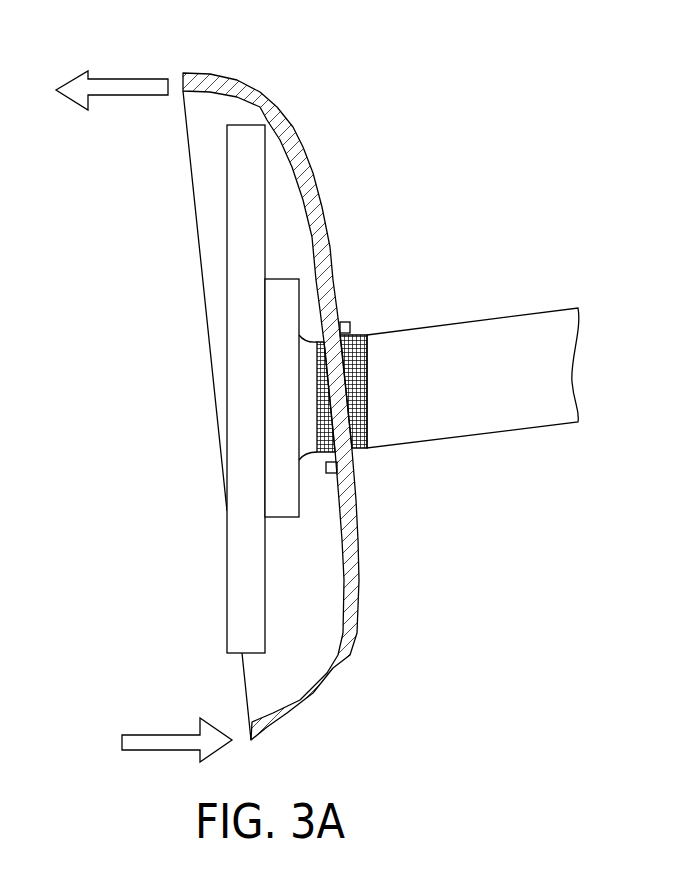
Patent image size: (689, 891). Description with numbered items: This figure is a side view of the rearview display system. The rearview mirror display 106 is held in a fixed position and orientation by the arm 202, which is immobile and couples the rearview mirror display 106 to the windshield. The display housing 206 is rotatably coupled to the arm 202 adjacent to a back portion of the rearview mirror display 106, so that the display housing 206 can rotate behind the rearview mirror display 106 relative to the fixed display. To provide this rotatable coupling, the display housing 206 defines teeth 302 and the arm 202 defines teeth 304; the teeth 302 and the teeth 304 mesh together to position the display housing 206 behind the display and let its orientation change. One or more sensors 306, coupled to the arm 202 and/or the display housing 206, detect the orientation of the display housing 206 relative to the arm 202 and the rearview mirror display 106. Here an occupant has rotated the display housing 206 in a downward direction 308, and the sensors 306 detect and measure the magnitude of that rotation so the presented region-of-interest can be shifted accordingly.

The rearview mirror display 106 is at (240, 597).
The arm 202 is at (522, 330).
The display housing 206 is at (270, 107).
The teeth 302 is at (367, 393).
The teeth 304 is at (371, 463).
The sensors 306 is at (347, 322).
The downward direction 308 is at (133, 96).